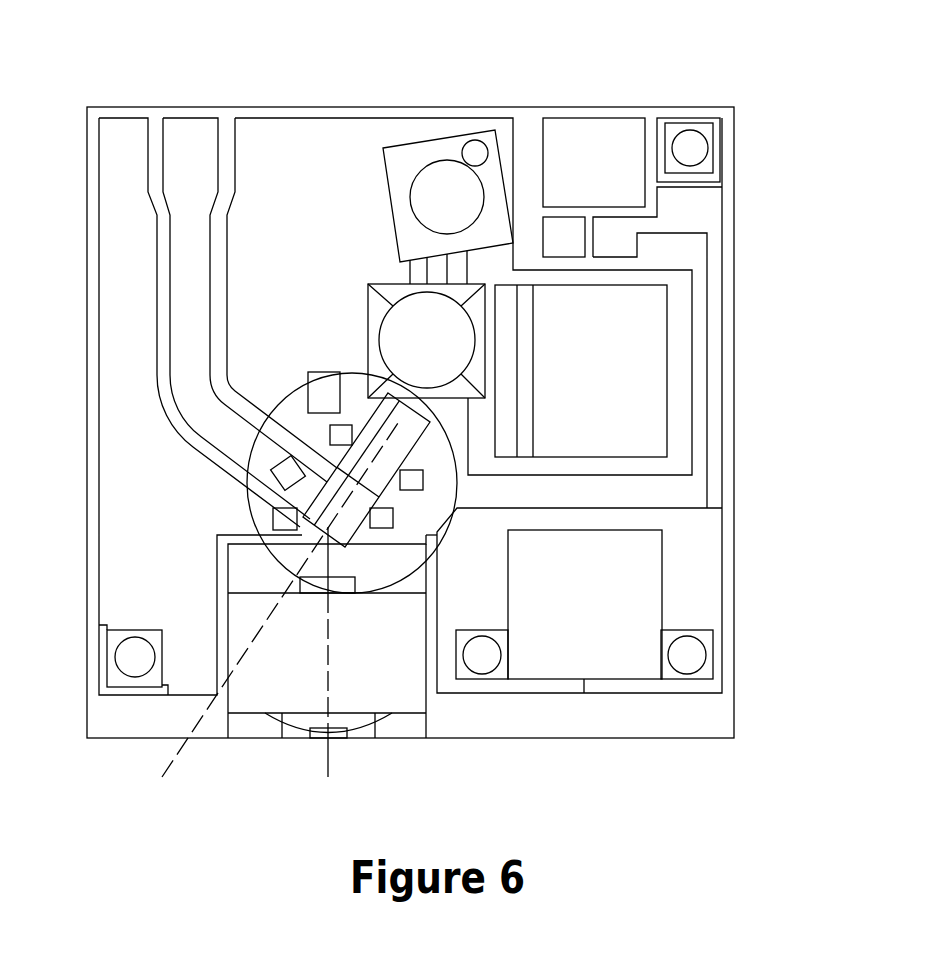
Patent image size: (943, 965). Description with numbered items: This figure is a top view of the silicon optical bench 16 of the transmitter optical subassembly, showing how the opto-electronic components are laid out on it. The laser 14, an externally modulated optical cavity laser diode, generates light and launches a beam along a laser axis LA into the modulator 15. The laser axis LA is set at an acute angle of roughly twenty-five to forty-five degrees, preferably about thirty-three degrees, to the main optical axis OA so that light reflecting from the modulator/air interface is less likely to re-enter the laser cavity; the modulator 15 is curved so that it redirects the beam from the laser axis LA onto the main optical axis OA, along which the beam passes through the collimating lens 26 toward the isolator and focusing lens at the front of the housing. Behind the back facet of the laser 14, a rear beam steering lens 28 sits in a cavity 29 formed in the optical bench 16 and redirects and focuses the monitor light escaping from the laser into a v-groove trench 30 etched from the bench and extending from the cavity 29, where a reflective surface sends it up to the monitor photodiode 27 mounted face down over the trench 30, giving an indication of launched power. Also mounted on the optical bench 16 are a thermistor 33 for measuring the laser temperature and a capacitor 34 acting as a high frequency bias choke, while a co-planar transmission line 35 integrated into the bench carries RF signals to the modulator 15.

The laser 14 is at (403, 433).
The modulator 15 is at (328, 502).
The optical bench 16 is at (733, 738).
The collimating lens 26 is at (263, 668).
The photodiode 27 is at (445, 197).
The rear beam steering lens 28 is at (415, 327).
The cavity 29 is at (367, 293).
The v-groove trench 30 is at (442, 270).
The thermistor 33 is at (662, 584).
The capacitor 34 is at (667, 343).
The co-planar transmission line 35 is at (237, 438).
The laser axis LA is at (268, 614).
The main optical axis OA is at (329, 668).